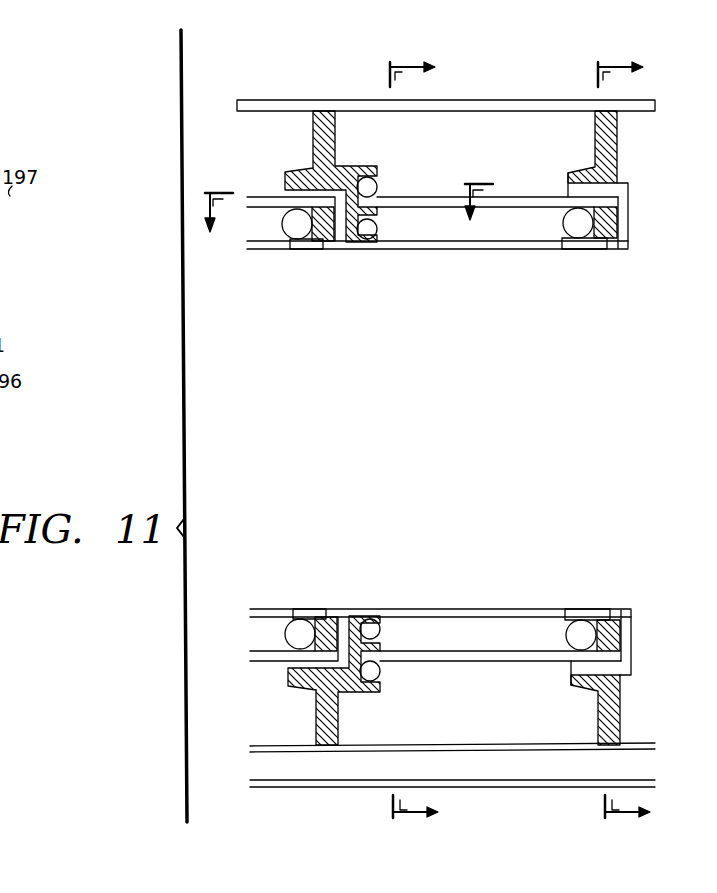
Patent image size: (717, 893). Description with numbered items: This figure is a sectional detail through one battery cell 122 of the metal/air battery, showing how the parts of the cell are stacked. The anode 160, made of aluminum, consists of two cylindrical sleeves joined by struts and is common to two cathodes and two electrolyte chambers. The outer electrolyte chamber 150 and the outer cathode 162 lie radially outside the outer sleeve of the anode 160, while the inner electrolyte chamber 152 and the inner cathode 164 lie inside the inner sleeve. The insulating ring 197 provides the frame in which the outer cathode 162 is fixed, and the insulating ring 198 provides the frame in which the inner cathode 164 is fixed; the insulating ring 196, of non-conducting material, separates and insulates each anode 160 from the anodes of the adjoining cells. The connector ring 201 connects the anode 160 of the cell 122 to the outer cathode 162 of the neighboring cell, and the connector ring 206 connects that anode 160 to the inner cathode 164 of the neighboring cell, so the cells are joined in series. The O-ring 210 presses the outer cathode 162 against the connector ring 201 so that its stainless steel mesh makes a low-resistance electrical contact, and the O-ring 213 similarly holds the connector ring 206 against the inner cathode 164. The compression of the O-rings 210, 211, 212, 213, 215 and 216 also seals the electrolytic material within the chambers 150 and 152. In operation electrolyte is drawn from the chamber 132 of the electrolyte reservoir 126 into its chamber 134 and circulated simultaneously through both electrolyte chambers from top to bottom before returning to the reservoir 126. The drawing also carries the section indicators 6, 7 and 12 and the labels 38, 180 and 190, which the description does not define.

The plate 38 is at (275, 99).
The section line 6- 6 is at (421, 445).
The section line 7- 7 is at (631, 445).
The section line 12- 12 is at (344, 198).
The insulating ring 197 is at (336, 144).
The connector ring 201 is at (279, 189).
The outer cathode 162 is at (265, 196).
The anode 160 is at (273, 249).
The insulating ring 196 is at (337, 251).
The O-ring 210 is at (297, 241).
The O-ring 215 is at (376, 190).
The O-ring 216 is at (376, 233).
The outer electrolyte chamber 150 is at (533, 233).
The region 180 is at (514, 408).
The battery cell 122 is at (514, 463).
The insulating ring 198 is at (338, 712).
The connector ring 206 is at (291, 670).
The inner cathode 164 is at (267, 661).
The O-ring 213 is at (299, 619).
The O-ring 212 is at (381, 630).
The O-ring 211 is at (381, 674).
The inner electrolyte chamber 152 is at (538, 643).
The region 190 is at (500, 693).
The electrolyte reservoir 126 is at (458, 744).
The chamber 134 is at (532, 779).
The chamber 132 is at (532, 817).